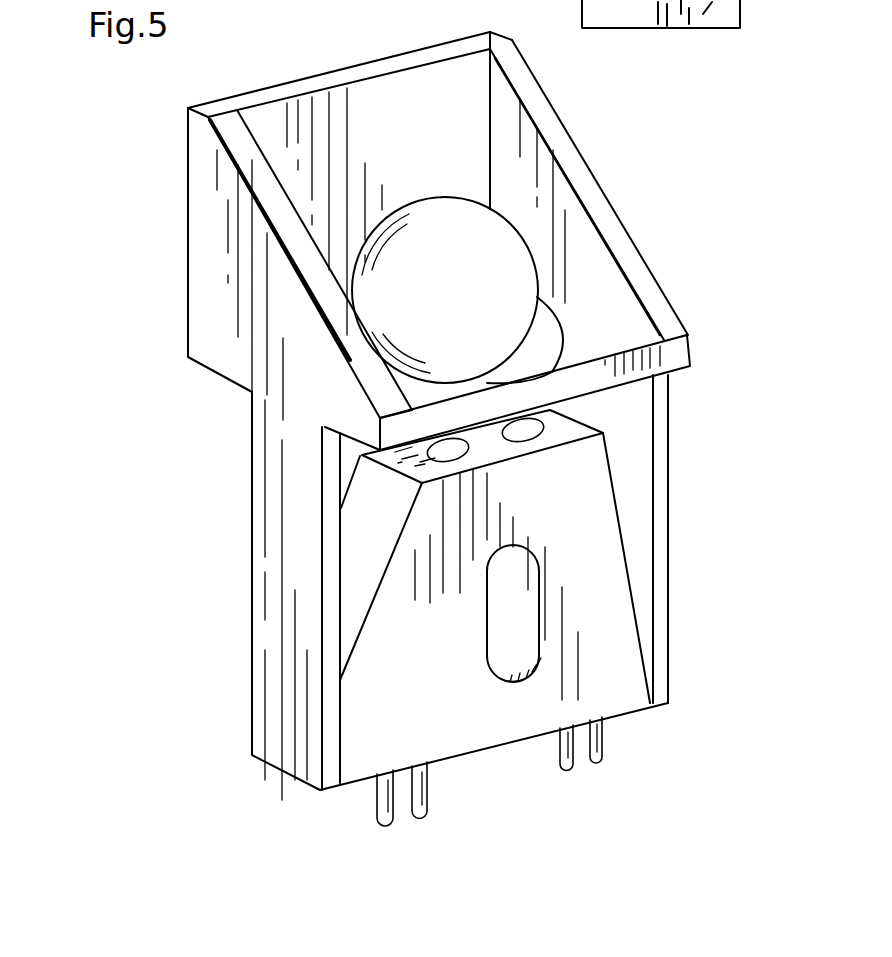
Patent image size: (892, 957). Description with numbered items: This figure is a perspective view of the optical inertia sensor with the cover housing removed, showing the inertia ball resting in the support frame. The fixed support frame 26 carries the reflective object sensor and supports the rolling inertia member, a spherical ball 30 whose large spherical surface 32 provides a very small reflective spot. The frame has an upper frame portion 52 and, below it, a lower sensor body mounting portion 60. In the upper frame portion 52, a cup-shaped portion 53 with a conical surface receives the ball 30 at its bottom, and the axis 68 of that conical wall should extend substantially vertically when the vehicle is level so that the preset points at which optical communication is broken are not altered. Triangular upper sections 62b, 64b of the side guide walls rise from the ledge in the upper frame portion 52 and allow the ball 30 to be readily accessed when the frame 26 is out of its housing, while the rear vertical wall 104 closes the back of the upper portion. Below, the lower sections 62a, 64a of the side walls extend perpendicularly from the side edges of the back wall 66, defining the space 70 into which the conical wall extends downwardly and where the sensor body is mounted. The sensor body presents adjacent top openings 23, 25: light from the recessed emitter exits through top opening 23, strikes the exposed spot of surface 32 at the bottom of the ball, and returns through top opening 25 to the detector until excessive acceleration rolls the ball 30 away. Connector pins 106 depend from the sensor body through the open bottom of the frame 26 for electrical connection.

The fixed support frame 26 is at (135, 184).
The upper frame portion 52 is at (698, 287).
The rear vertical wall 104 is at (458, 129).
The upper section of side guide wall 62b is at (213, 255).
The upper section of side guide wall 64b is at (597, 180).
The axis of the conical wall 68 is at (592, 350).
The cup-shaped portion 53 is at (551, 316).
The spherical ball 30 is at (495, 275).
The spherical surface 32 is at (462, 304).
The lower sensor body mounting portion 60 is at (205, 555).
The lower section of side guide wall 62a is at (272, 662).
The lower section of side guide wall 64a is at (668, 612).
The back wall 66 is at (565, 412).
The top opening 23 is at (446, 451).
The top opening 25 is at (525, 430).
The space 70 is at (625, 446).
The connector pins 106 is at (393, 822).